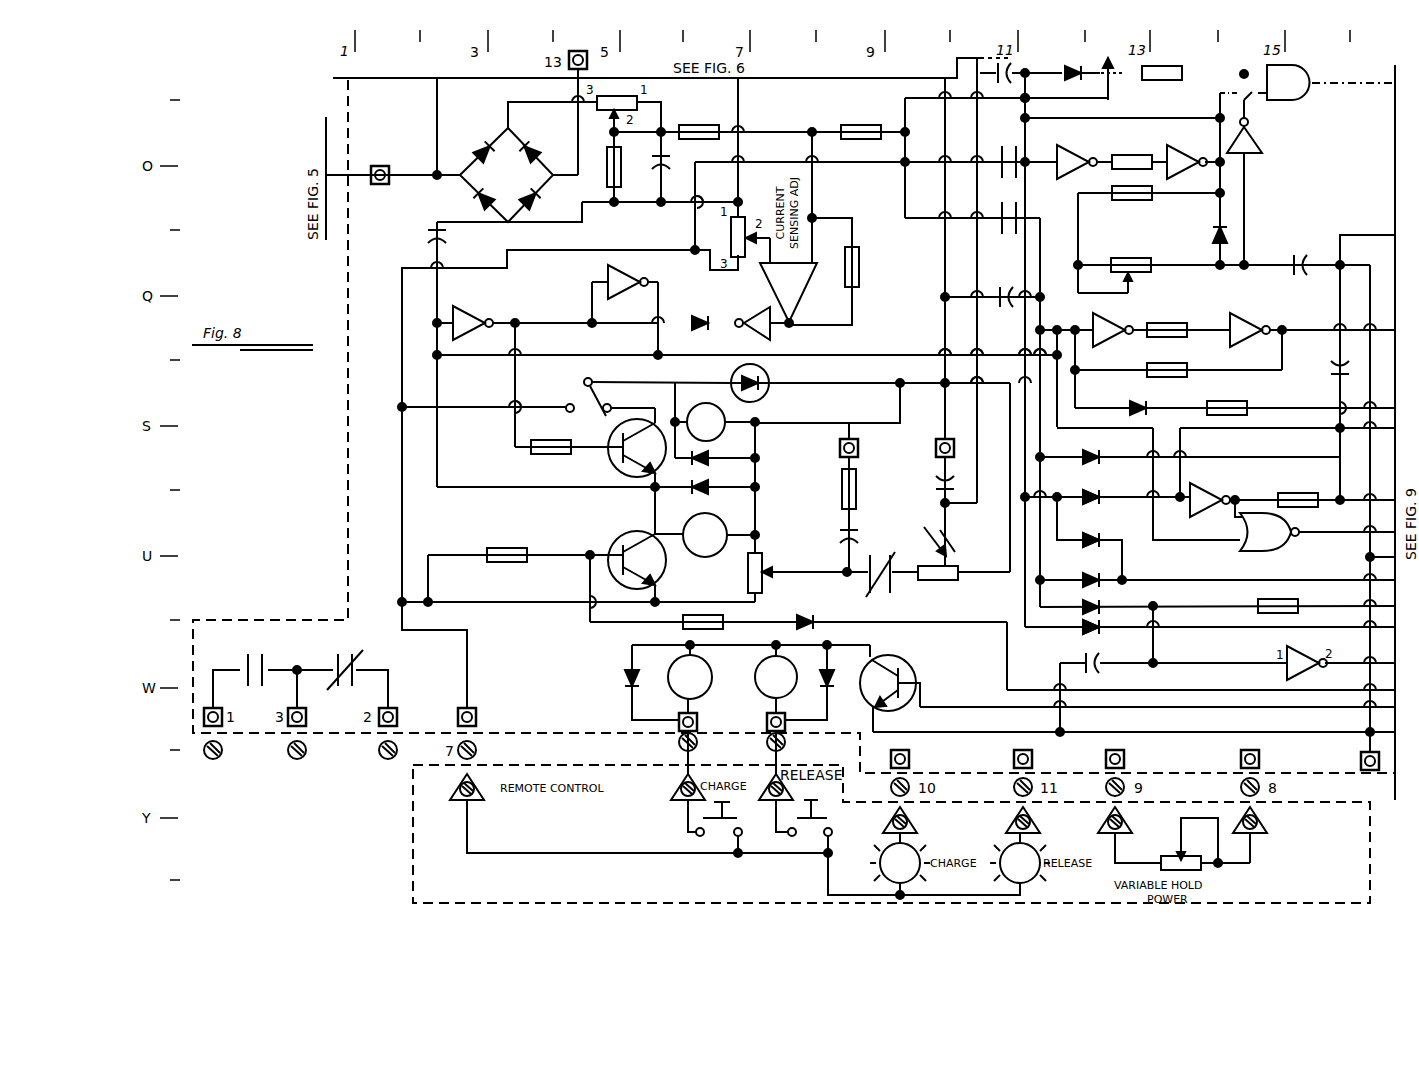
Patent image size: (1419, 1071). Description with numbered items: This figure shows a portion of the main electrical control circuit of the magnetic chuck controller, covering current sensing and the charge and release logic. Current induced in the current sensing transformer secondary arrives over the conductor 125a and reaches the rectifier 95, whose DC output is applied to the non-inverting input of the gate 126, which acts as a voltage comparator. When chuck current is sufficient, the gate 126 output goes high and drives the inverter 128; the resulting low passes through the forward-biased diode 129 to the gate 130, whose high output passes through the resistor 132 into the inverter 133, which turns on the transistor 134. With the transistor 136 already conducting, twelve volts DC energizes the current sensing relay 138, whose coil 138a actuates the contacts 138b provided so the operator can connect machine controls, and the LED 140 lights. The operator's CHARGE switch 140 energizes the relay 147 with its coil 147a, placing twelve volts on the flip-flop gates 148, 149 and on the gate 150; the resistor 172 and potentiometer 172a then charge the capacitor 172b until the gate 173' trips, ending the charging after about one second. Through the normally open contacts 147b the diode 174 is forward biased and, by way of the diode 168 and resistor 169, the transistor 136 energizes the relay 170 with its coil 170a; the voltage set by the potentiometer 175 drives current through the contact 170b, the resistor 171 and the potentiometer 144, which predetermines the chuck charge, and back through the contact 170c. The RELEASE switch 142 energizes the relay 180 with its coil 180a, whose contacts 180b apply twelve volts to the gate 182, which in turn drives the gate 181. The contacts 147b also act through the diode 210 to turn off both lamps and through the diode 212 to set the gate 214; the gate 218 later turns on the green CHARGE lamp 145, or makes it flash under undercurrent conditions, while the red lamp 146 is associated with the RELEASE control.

The rectifier 95 is at (480, 138).
The conductor 125a is at (382, 186).
The gate 126 is at (805, 297).
The inverter 128 is at (758, 312).
The diode 129 is at (700, 317).
The gate 130 is at (628, 292).
The resistor 132 is at (530, 449).
The inverter 133 is at (468, 308).
The transistor 134 is at (623, 471).
The transistor 136 is at (615, 541).
The current sensing relay 138 is at (689, 408).
The coil of current sensing relay 138a is at (258, 658).
The contacts of current sensing relay 138b is at (343, 658).
The CHARGE switch 140 is at (771, 371).
The RELEASE switch 142 is at (822, 808).
The potentiometer 144 is at (1164, 850).
The GREEN CHARGE lamp 145 is at (927, 850).
The RED lamp 146 is at (1046, 850).
The relay 147 is at (660, 661).
The coil of relay 147a is at (672, 697).
The normally open contacts of relay 147b is at (1004, 150).
The gate 148 is at (1070, 148).
The gate 149 is at (1180, 148).
The gate 150 is at (1284, 102).
The diode 168 is at (812, 614).
The resistor 169 is at (684, 624).
The relay 170 is at (732, 521).
The coil of relay 170a is at (688, 524).
The normally open contact of relay 170b is at (866, 538).
The normally open contact of relay 170c is at (923, 506).
The resistor 171 is at (858, 491).
The resistor 172 is at (1130, 198).
The potentiometer 172a is at (1142, 277).
The capacitor 172b is at (1302, 256).
The gate 173' is at (1273, 120).
The diode 174 is at (1096, 632).
The potentiometer 175 is at (746, 574).
The relay 180 is at (762, 701).
The coil of relay 180a is at (760, 672).
The normally open contacts of relay 180b is at (1006, 240).
The gate 181 is at (1245, 315).
The gate 182 is at (1112, 340).
The diode 210 is at (1088, 546).
The diode 212 is at (1088, 492).
The gate 214 is at (1205, 490).
The gate 218 is at (1270, 551).